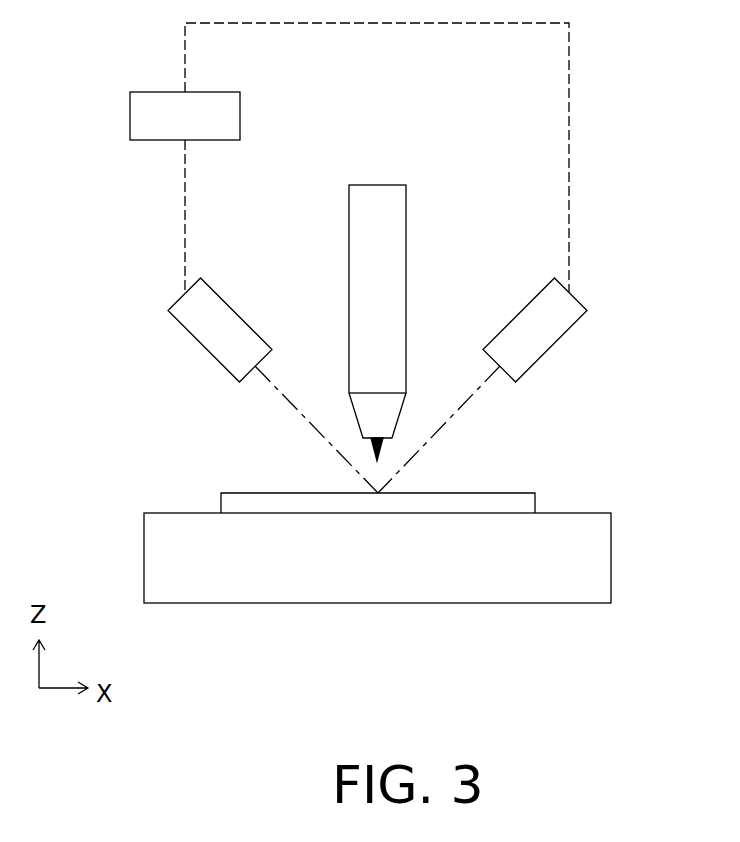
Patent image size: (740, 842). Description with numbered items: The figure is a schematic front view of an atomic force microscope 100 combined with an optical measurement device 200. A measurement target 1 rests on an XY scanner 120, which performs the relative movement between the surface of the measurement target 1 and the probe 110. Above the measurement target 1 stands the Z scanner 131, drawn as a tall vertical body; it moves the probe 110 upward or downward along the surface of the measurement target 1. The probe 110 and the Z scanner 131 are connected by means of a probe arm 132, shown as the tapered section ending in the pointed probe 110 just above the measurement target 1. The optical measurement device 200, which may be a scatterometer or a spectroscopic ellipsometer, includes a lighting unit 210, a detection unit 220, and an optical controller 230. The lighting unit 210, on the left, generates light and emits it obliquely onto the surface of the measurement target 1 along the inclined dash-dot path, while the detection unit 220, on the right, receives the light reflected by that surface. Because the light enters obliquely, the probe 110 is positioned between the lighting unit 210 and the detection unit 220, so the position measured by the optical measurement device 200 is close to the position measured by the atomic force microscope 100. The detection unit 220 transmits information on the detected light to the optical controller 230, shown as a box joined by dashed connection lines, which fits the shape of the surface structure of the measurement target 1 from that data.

The measurement target 1 is at (235, 503).
The atomic force microscope 100 is at (371, 310).
The probe 110 is at (390, 455).
The XY scanner 120 is at (174, 591).
The Z scanner 131 is at (385, 246).
The probe arm 132 is at (362, 407).
The optical measurement device 200 is at (614, 189).
The lighting unit 210 is at (194, 323).
The detection unit 220 is at (561, 323).
The optical controller 230 is at (185, 116).